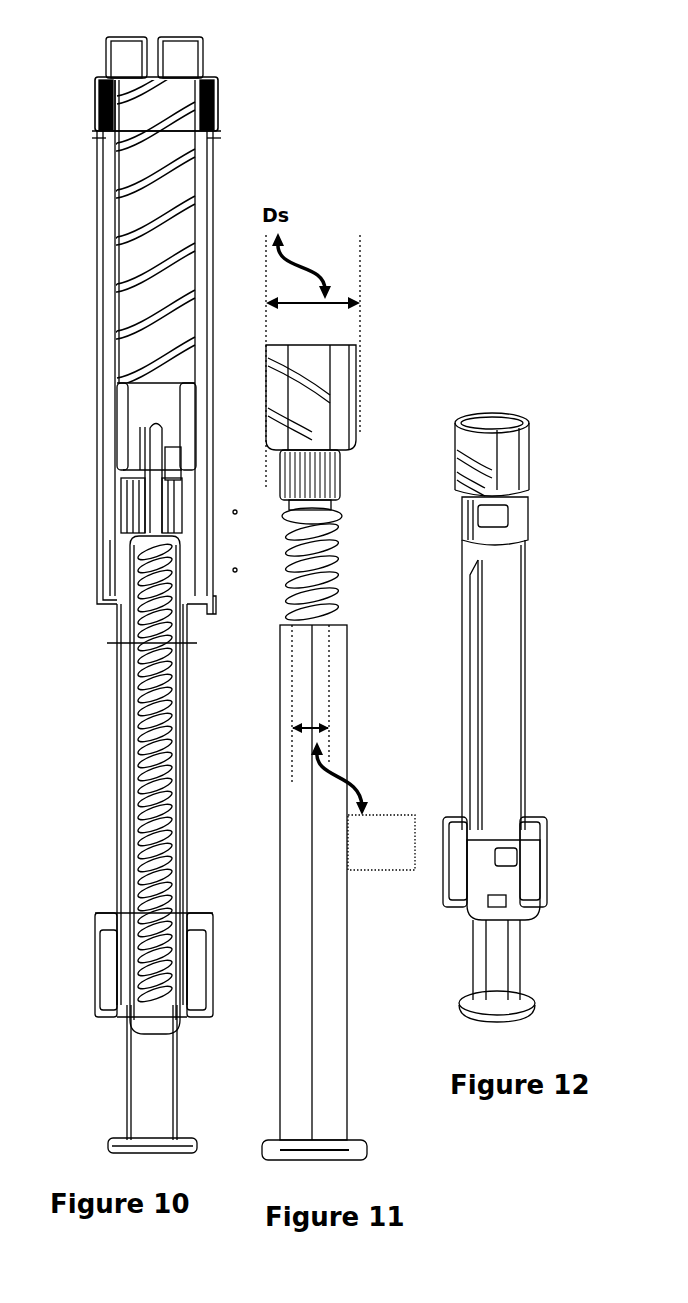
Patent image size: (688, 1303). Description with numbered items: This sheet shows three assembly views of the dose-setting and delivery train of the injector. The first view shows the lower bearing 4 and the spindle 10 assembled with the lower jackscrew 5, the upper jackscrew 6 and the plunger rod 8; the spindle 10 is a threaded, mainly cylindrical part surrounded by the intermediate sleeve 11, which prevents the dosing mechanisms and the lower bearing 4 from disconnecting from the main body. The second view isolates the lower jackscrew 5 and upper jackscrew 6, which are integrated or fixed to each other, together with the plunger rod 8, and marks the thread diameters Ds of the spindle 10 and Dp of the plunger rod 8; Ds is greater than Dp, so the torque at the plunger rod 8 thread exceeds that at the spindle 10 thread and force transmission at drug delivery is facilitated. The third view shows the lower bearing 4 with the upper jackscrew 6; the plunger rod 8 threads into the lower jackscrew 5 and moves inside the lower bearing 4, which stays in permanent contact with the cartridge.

In FIG. 10, the lower bearing 4 is at (117, 718).
In FIG. 12, the lower bearing 4 is at (505, 643).
In FIG. 10, the lower jackscrew 5 is at (150, 765).
In FIG. 11, the lower jackscrew 5 is at (317, 552).
In FIG. 10, the upper jackscrew 6 is at (158, 428).
In FIG. 11, the upper jackscrew 6 is at (345, 438).
In FIG. 12, the upper jackscrew 6 is at (505, 452).
In FIG. 10, the plunger rod 8 is at (178, 1116).
In FIG. 11, the plunger rod 8 is at (325, 1098).
In FIG. 10, the spindle 10 is at (127, 278).
In FIG. 10, the intermediate sleeve 11 is at (215, 158).